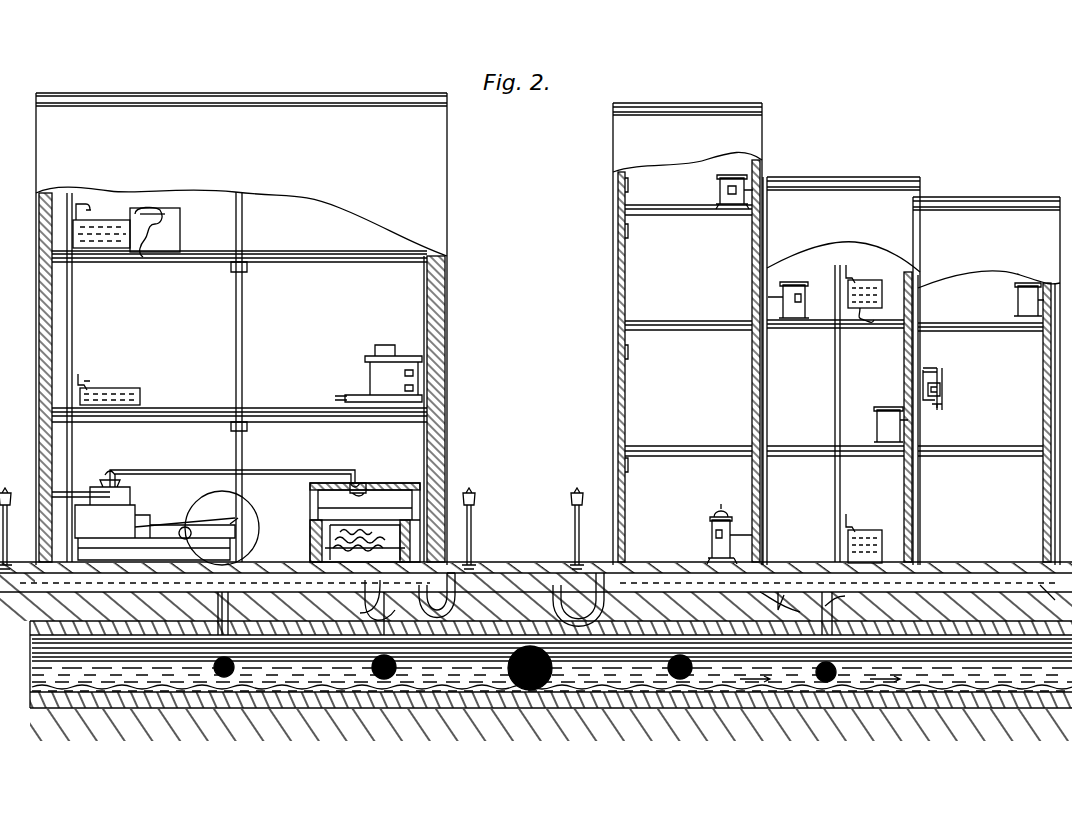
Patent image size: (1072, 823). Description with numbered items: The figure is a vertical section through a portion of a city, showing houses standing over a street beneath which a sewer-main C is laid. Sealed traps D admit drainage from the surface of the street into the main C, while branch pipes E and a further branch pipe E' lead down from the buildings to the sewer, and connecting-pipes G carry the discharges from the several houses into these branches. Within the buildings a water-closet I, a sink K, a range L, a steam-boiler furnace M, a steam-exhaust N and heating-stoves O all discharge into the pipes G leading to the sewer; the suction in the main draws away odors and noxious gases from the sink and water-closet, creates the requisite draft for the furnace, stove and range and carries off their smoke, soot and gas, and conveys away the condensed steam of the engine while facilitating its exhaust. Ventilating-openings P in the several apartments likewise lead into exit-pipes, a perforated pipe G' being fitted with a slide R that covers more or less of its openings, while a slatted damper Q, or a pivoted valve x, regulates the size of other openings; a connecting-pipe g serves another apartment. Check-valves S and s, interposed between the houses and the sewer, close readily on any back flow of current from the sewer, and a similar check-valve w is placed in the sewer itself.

The sewer-main C is at (536, 651).
The water-closet I is at (132, 229).
The sink K is at (118, 389).
The range L is at (380, 373).
The slatted valve or damper Q is at (335, 398).
The steam-exhaust N is at (217, 517).
The steam-boiler furnace M is at (365, 522).
The branch pipe E is at (301, 613).
The sealed trap D is at (482, 599).
The check-valve S is at (826, 613).
The drain pipe E' is at (850, 607).
The connecting-pipe G is at (1048, 601).
The heating-stove O is at (869, 355).
The ventilating-opening P is at (629, 232).
The slide R is at (940, 390).
The valve or damper x is at (936, 412).
The pipe G' is at (834, 387).
The check-valve w is at (781, 522).
The check-valve s is at (769, 521).
The connecting-pipe g is at (1032, 521).